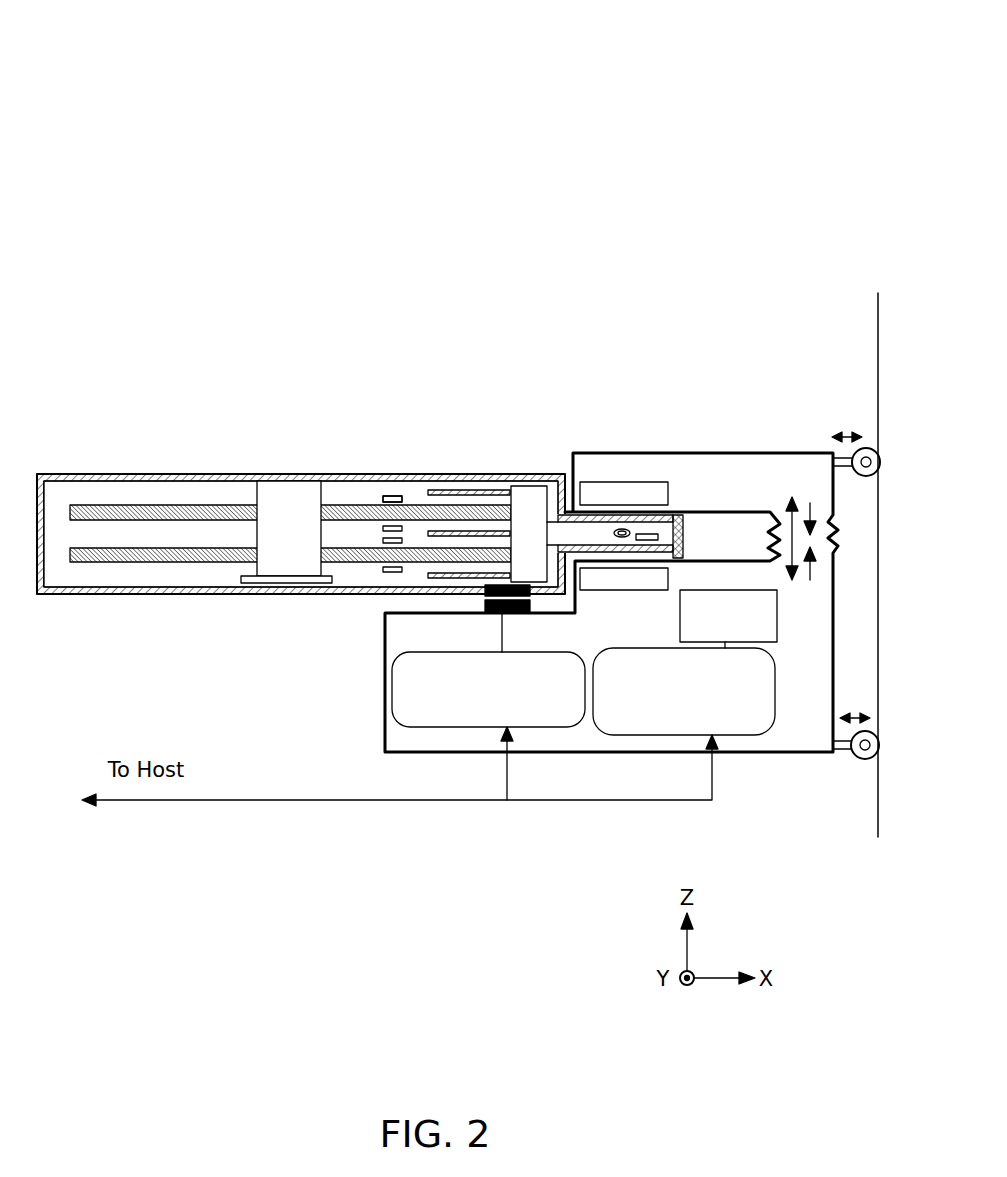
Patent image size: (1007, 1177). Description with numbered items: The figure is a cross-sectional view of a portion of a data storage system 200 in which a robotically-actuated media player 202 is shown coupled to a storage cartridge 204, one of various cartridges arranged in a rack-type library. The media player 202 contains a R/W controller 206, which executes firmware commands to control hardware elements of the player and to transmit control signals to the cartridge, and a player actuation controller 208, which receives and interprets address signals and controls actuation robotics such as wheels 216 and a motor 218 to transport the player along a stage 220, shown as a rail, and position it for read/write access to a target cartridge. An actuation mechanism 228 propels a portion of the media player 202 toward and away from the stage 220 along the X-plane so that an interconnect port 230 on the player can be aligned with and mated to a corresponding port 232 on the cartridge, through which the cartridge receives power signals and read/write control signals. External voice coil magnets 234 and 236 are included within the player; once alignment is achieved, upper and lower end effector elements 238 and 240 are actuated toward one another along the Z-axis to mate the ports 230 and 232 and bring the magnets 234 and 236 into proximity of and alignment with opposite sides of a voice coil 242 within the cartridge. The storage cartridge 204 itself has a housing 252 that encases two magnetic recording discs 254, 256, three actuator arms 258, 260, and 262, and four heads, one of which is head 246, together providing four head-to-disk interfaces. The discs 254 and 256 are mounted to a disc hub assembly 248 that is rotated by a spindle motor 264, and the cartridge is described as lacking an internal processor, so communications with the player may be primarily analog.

The data storage system 200 is at (122, 78).
The robotically-actuated media player 202 is at (786, 749).
The storage cartridge 204 is at (220, 460).
The R/W controller 206 is at (471, 710).
The player actuation controller 208 is at (667, 733).
The wheels 216 is at (879, 742).
The motor 218 is at (711, 640).
The stage 220 is at (878, 325).
The actuation mechanism 228 is at (836, 456).
The interconnect port 230 is at (485, 608).
The corresponding port 232 is at (485, 592).
The external voice coil magnet 234 is at (624, 494).
The external voice coil magnet 236 is at (624, 580).
The upper end effector element 238 is at (714, 475).
The lower end effector element 240 is at (422, 630).
The voice coil 242 is at (638, 536).
The head 246 is at (383, 500).
The disc hub assembly 248 is at (272, 541).
The housing 252 is at (118, 474).
The magnetic recording disc 254 is at (103, 505).
The magnetic recording disc 256 is at (103, 548).
The actuator arm 258 is at (490, 497).
The actuator arm 260 is at (447, 532).
The actuator arm 262 is at (478, 576).
The spindle motor 264 is at (246, 580).